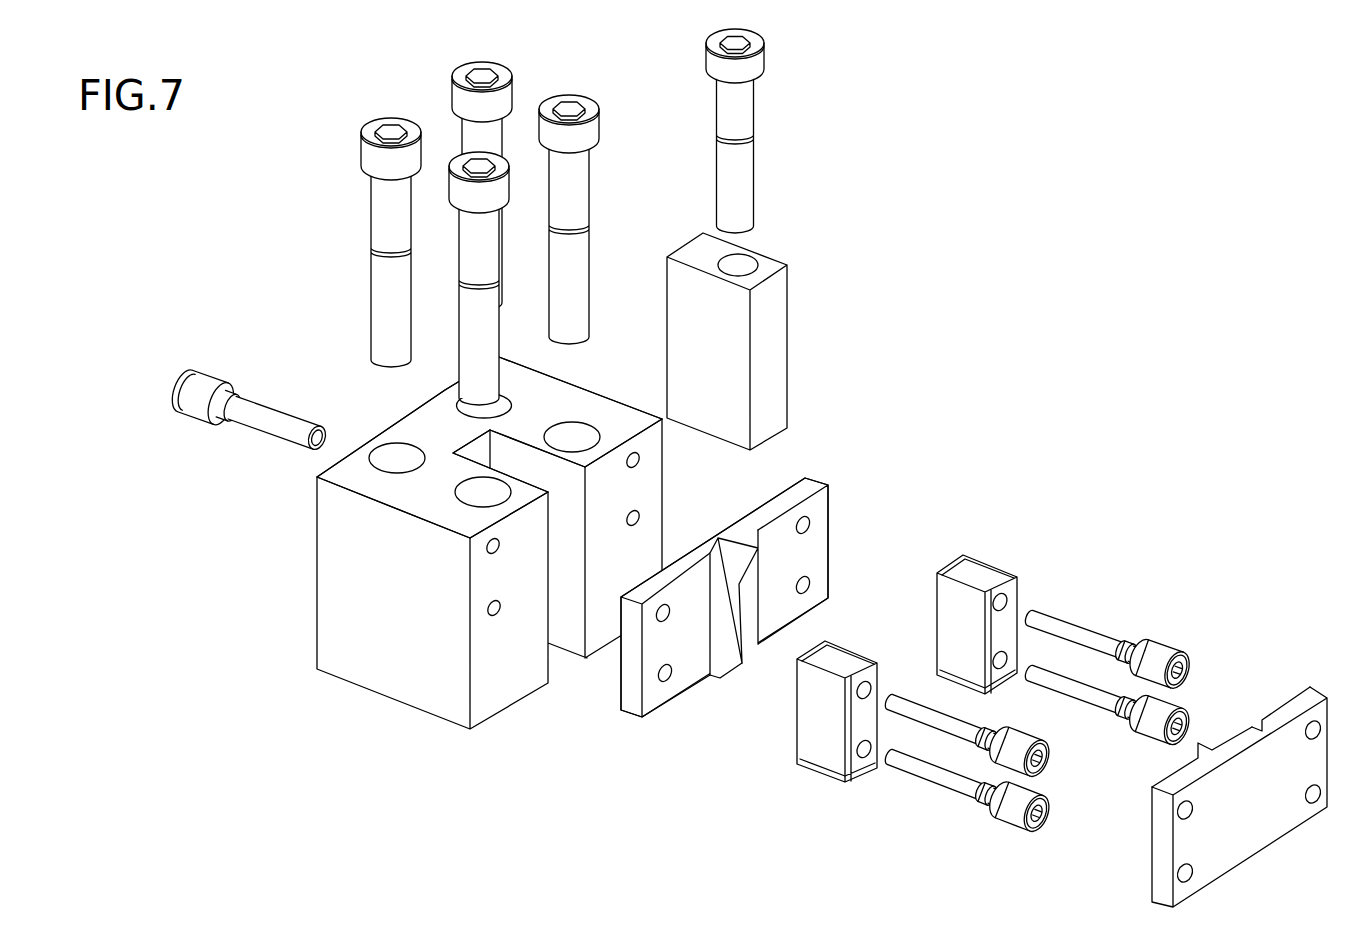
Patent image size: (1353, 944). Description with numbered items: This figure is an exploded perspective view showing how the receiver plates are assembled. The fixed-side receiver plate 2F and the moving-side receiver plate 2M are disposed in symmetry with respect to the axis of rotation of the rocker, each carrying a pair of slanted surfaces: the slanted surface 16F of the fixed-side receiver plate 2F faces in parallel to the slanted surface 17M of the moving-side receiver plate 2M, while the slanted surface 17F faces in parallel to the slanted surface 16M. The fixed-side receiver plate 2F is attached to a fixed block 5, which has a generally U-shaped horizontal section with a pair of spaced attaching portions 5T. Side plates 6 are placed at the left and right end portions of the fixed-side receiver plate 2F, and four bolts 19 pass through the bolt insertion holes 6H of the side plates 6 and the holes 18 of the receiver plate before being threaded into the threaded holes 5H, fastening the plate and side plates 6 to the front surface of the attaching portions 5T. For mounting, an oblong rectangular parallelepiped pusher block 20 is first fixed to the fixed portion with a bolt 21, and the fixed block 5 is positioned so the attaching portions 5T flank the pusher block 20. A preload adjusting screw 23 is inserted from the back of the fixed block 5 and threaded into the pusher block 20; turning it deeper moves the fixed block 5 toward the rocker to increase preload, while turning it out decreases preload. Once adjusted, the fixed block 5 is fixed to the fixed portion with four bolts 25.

The fixed-side receiver plate 2F is at (754, 613).
The moving-side receiver plate 2M is at (1152, 840).
The fixed block 5 is at (327, 527).
The attaching portions 5T is at (629, 418).
The threaded holes 5H is at (637, 512).
The side plates 6 is at (813, 740).
The bolt insertion holes 6H is at (868, 752).
The slanted surface 16F is at (737, 663).
The slanted surface 16M is at (1247, 732).
The slanted surface 17F is at (747, 570).
The slanted surface 17M is at (1203, 735).
The holes of fixed-side plate 18 is at (669, 677).
The bolts 19 is at (953, 783).
The pusher block 20 is at (778, 292).
The bolt 21 is at (752, 106).
The preload adjusting screw 23 is at (270, 414).
The bolts 25 is at (597, 131).